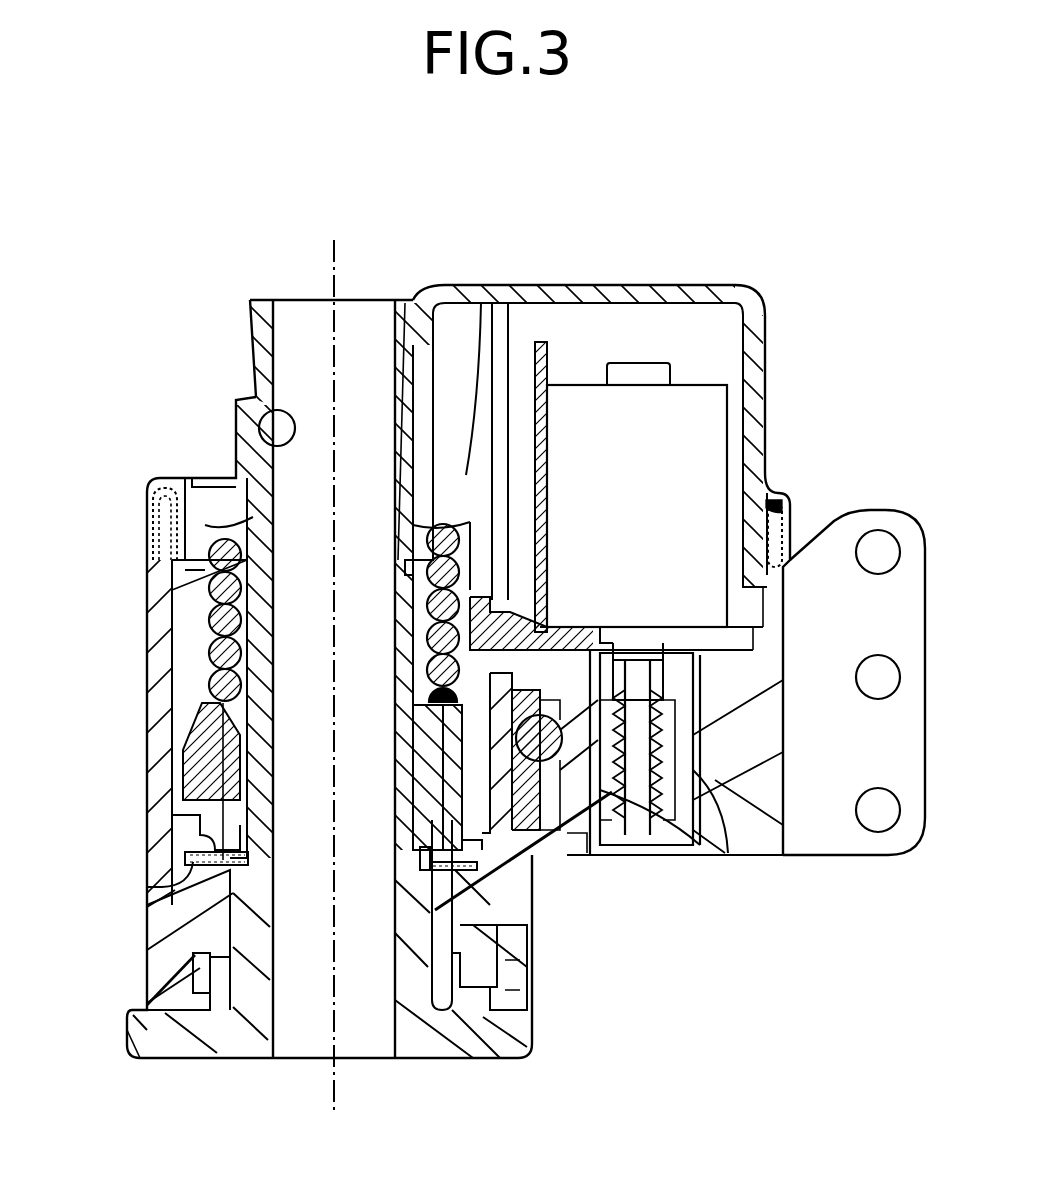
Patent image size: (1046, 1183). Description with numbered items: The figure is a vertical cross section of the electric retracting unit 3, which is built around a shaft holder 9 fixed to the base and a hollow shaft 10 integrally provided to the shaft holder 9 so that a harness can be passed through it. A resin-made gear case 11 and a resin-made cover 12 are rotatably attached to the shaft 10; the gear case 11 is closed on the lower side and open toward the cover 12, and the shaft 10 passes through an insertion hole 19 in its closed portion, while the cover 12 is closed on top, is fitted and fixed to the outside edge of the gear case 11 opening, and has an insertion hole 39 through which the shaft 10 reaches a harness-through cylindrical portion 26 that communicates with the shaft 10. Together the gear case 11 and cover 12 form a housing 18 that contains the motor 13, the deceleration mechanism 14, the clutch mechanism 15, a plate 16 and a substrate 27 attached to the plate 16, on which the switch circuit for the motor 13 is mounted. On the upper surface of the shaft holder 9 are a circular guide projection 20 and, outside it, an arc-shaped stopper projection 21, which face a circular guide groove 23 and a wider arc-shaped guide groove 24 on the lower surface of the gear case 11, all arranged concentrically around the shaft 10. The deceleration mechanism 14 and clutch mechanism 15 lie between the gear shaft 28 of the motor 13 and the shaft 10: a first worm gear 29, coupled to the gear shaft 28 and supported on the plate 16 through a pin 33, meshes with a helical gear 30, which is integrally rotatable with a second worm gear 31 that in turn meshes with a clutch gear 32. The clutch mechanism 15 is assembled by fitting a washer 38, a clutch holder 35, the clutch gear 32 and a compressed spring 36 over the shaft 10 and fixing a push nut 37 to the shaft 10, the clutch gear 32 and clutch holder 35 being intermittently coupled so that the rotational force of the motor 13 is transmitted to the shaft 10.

The electric retracting unit 3 is at (730, 236).
The shaft holder 9 is at (132, 1060).
The shaft 10 is at (257, 940).
The gear case 11 is at (147, 583).
The cover 12 is at (431, 290).
The motor 13 is at (717, 381).
The deceleration mechanism 14 is at (784, 840).
The clutch mechanism 15 is at (200, 641).
The plate 16 is at (680, 664).
The housing 18 is at (476, 300).
The insertion hole 19 is at (420, 977).
The guide projection 20 is at (160, 990).
The stopper projection 21 is at (492, 996).
The guide groove 23 is at (196, 967).
The guide groove 24 is at (480, 985).
The harness-through cylindrical portion 26 is at (258, 300).
The substrate 27 is at (542, 325).
The gear shaft 28 is at (631, 670).
The first worm gear 29 is at (717, 848).
The helical gear 30 is at (613, 826).
The second worm gear 31 is at (532, 832).
The clutch gear 32 is at (190, 741).
The pin 33 is at (677, 838).
The clutch holder 35 is at (185, 815).
The spring 36 is at (212, 657).
The push nut 37 is at (200, 480).
The washer 38 is at (172, 900).
The insertion hole 39 is at (250, 396).